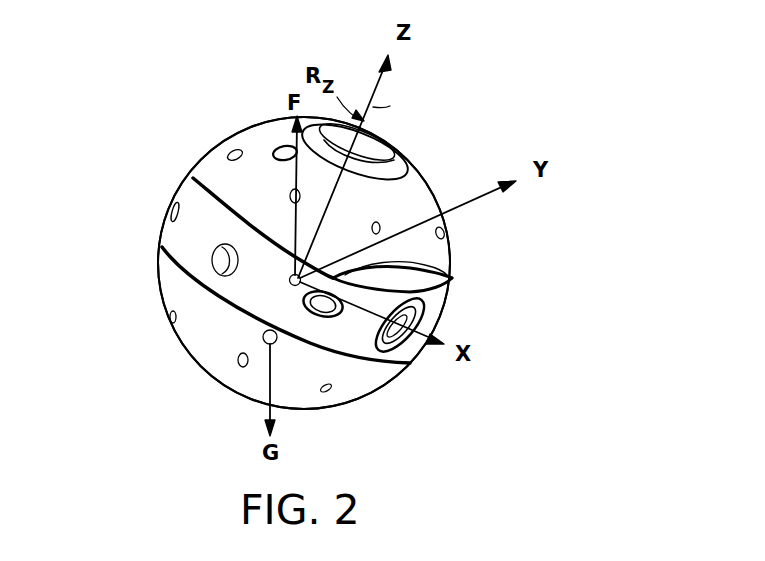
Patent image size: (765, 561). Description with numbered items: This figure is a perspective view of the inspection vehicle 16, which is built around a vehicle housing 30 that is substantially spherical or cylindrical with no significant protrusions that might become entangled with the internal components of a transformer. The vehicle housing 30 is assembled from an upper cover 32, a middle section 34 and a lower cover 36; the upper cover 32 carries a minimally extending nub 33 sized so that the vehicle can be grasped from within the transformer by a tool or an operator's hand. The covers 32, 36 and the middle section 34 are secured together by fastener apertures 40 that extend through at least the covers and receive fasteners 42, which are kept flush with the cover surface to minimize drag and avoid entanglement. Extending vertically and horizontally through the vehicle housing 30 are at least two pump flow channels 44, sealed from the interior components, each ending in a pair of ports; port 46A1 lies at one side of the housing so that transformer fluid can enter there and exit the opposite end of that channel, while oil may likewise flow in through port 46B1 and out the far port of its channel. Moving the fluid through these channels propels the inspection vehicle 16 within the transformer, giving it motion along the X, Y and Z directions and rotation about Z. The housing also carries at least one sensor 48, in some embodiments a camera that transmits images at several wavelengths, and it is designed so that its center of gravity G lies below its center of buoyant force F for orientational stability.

The inspection vehicle 16 is at (466, 124).
The vehicle housing 30 is at (458, 249).
The upper cover 32 is at (262, 126).
The nub 33 is at (380, 132).
The middle section 34 is at (196, 181).
The lower cover 36 is at (165, 293).
The fastener apertures 40 is at (228, 151).
The fasteners 42 is at (381, 228).
The pump flow channels 44 is at (284, 145).
The port 46A1 is at (262, 130).
The port 46B1 is at (450, 277).
The sensor 48 is at (433, 304).